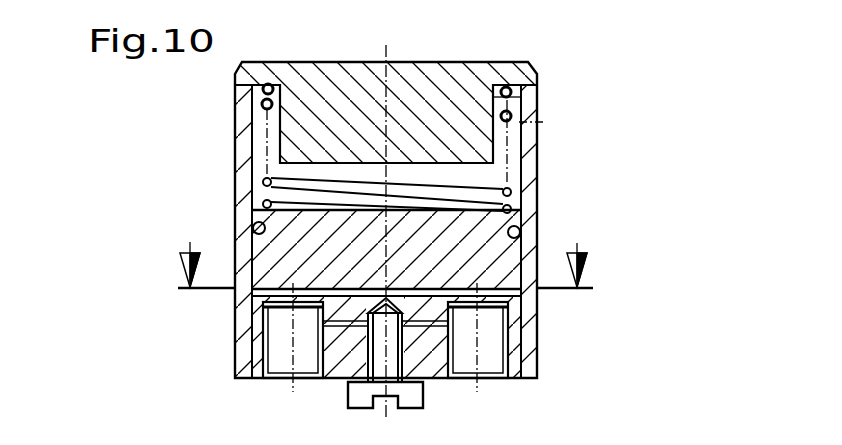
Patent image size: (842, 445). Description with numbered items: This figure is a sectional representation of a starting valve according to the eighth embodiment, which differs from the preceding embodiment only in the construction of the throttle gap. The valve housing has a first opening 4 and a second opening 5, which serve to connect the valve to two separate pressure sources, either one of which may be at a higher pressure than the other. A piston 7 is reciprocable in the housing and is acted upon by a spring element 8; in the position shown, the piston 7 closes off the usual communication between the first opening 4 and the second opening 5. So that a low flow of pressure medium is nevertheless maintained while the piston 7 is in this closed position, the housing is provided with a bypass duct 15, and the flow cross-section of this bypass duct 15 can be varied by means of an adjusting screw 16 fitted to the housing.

The first opening 4 is at (236, 373).
The second opening 5 is at (518, 376).
The piston 7 is at (308, 228).
The spring element 8 is at (460, 185).
The bypass duct 15 is at (263, 320).
The adjusting screw 16 is at (403, 368).